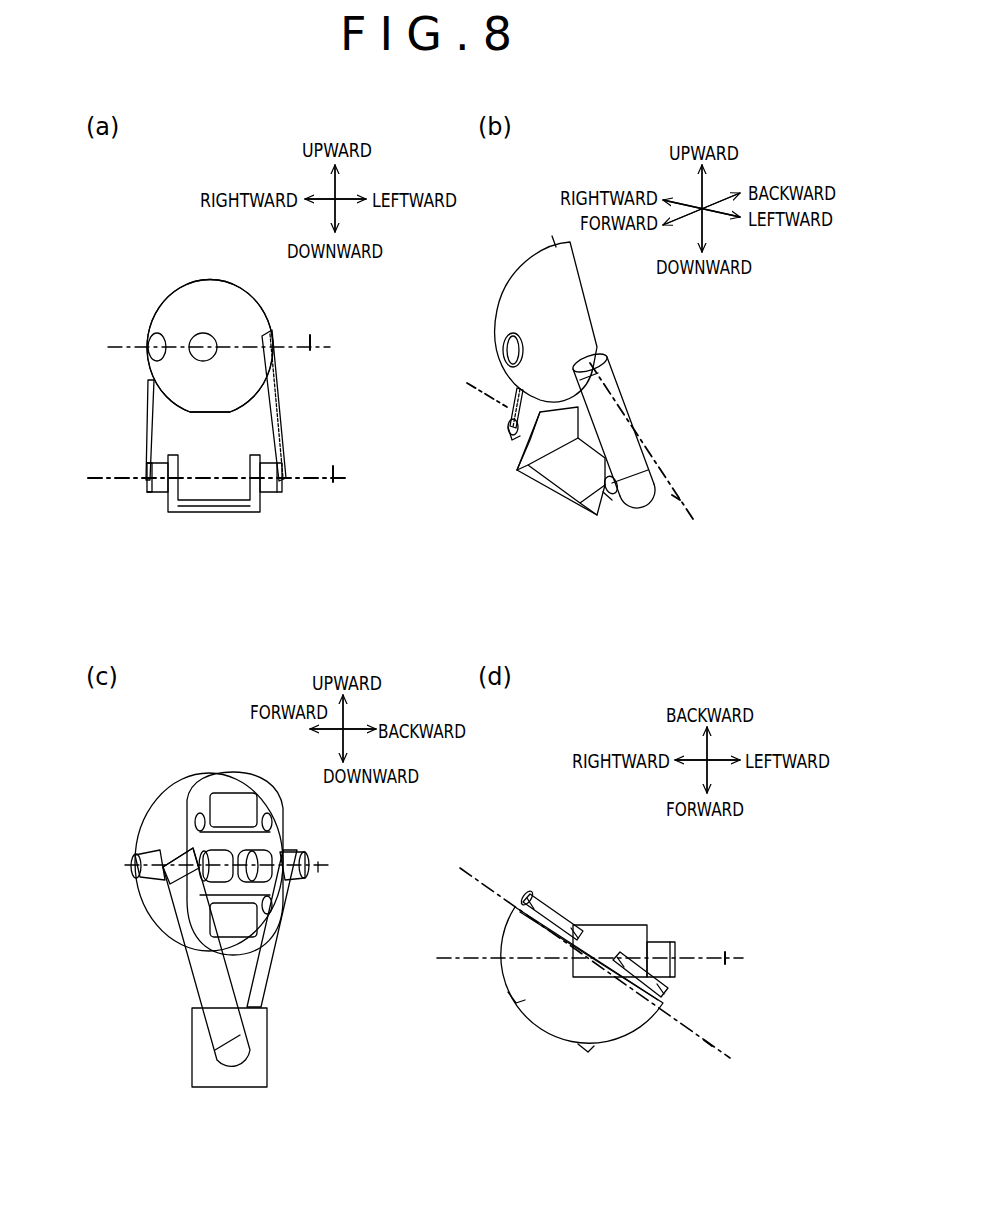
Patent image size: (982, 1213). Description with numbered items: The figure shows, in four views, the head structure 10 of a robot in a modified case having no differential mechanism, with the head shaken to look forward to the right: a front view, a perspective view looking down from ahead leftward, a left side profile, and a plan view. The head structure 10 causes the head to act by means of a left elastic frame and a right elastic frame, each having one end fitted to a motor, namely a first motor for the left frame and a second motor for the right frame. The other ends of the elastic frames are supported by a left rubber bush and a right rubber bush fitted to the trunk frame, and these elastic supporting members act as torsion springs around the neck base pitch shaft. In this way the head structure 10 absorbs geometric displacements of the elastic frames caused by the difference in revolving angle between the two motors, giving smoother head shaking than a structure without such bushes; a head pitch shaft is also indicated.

The head structure 10 is at (175, 270).